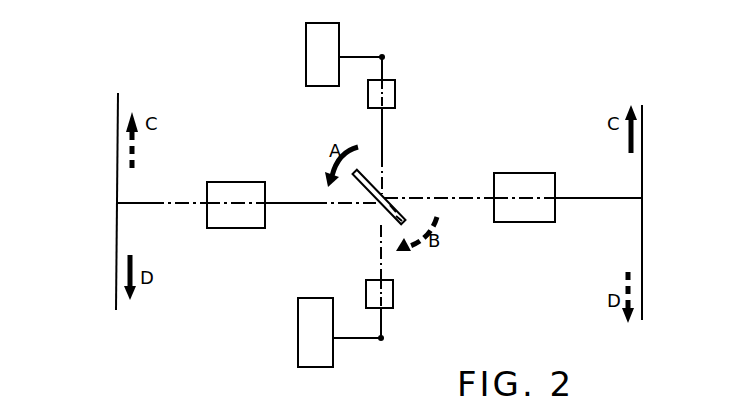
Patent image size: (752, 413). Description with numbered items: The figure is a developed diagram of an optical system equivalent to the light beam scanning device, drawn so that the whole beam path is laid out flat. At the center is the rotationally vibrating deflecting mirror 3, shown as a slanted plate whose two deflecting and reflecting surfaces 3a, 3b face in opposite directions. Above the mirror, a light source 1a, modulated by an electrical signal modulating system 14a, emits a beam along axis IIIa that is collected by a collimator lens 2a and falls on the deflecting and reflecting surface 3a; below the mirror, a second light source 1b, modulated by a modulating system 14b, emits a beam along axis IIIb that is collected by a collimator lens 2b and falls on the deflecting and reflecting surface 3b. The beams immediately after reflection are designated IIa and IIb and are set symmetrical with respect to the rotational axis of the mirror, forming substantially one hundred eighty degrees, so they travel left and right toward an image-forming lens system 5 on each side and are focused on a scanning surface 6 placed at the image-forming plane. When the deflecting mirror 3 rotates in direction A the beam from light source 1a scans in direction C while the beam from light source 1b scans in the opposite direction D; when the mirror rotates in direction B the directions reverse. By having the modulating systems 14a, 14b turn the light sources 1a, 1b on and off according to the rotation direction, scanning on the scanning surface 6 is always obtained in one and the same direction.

The light source 1a is at (383, 57).
The light source 1b is at (383, 338).
The collimator lens 2a is at (395, 90).
The collimator lens 2b is at (393, 301).
The deflecting mirror 3 is at (367, 182).
The deflecting and reflecting surface 3a is at (395, 208).
The deflecting and reflecting surface 3b is at (396, 223).
The image-forming lens system 5 is at (230, 228).
The scanning surface 6 is at (118, 122).
The modulating system 14a is at (310, 49).
The modulating system 14b is at (304, 332).
The light beam IIa is at (422, 196).
The light beam IIb is at (313, 205).
The optical axis IIIa is at (383, 136).
The optical axis IIIb is at (380, 228).